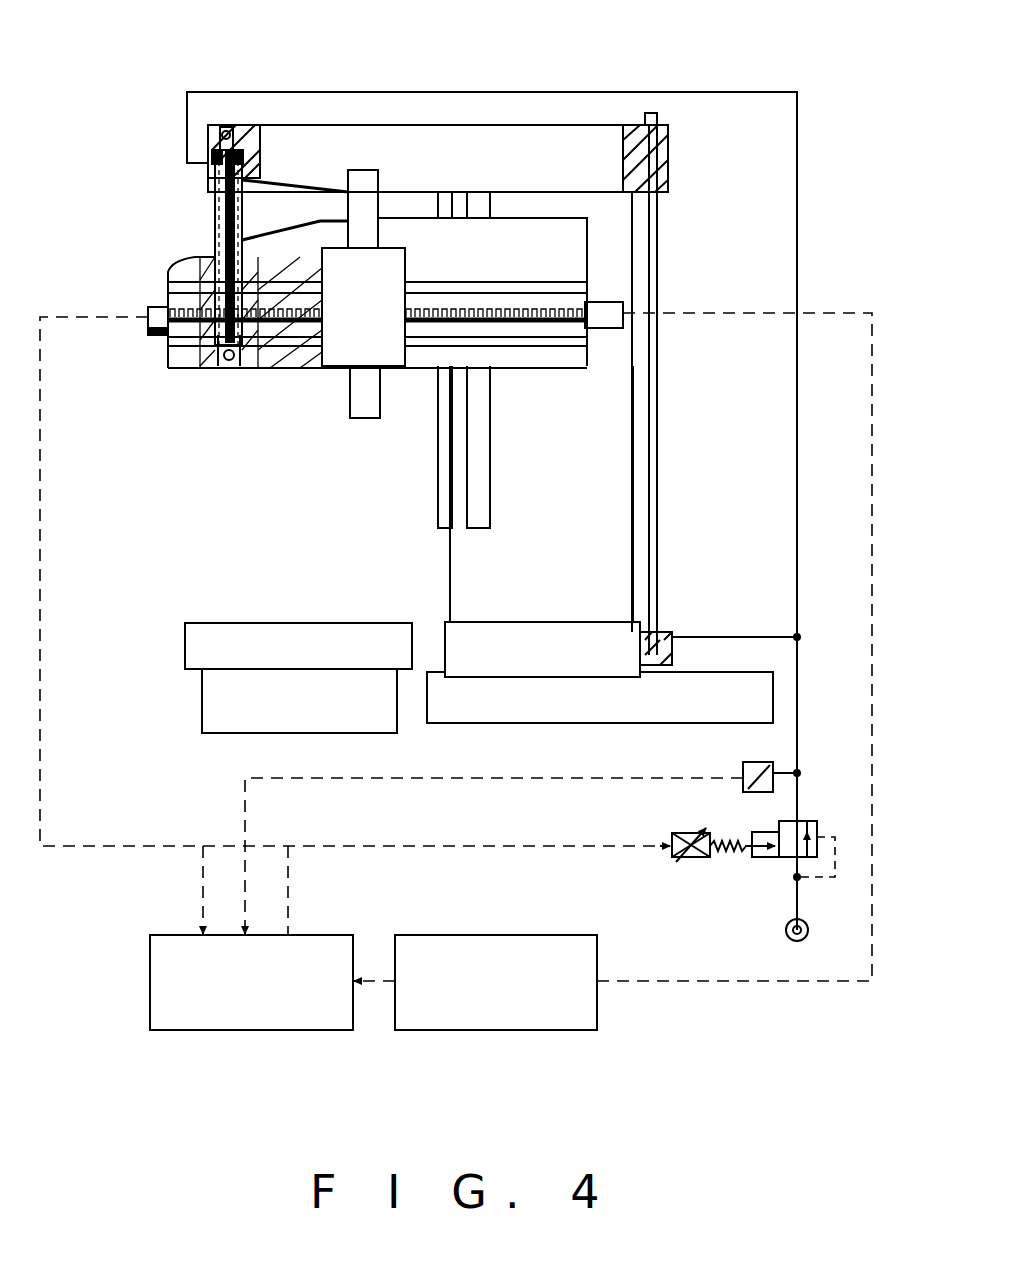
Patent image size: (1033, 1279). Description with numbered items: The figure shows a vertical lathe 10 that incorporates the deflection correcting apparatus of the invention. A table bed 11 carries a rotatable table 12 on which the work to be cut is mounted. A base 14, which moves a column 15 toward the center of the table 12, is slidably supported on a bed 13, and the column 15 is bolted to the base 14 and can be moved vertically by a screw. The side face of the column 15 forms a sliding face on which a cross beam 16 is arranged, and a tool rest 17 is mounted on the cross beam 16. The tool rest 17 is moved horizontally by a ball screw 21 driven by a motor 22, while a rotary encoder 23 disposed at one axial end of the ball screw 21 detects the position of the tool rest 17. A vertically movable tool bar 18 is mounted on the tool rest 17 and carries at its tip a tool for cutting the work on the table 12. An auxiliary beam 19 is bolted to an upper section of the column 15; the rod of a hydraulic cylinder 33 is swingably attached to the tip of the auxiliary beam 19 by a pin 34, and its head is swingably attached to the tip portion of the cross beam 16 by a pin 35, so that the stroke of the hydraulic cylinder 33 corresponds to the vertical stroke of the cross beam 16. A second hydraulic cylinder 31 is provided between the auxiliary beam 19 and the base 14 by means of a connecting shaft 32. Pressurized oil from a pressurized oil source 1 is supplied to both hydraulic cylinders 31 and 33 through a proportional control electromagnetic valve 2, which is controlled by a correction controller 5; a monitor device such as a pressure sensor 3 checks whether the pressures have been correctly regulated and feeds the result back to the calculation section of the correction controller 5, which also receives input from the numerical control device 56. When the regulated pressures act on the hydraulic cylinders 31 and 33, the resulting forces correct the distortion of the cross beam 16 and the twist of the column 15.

The pressurized oil source 1 is at (809, 932).
The proportional control electromagnetic valve 2 is at (768, 860).
The pressure sensor 3 is at (738, 786).
The correction controller 5 is at (292, 1032).
The vertical lathe 10 is at (722, 76).
The table bed 11 is at (200, 722).
The rotatable table 12 is at (203, 622).
The bed 13 is at (515, 705).
The base 14 is at (608, 662).
The column 15 is at (583, 543).
The cross beam 16 is at (256, 369).
The tool rest 17 is at (332, 357).
The tool bar 18 is at (366, 418).
The auxiliary beam 19 is at (603, 150).
The ball screw 21 is at (572, 306).
The motor 22 is at (604, 330).
The rotary encoder 23 is at (162, 302).
The hydraulic cylinder 31 is at (668, 632).
The connecting shaft 32 is at (661, 500).
The hydraulic cylinder 33 is at (216, 215).
The pin 34 is at (230, 128).
The pin 35 is at (377, 337).
The NC control device 56 is at (552, 1032).